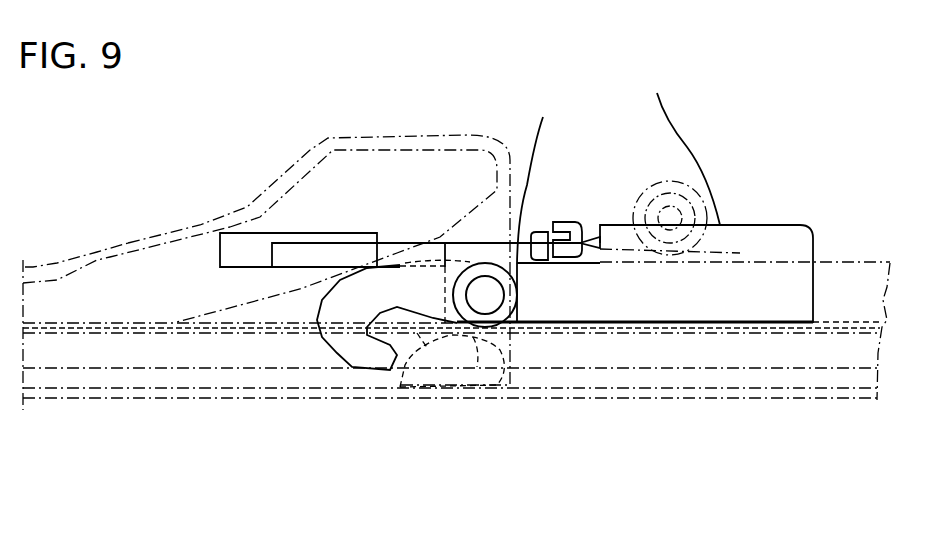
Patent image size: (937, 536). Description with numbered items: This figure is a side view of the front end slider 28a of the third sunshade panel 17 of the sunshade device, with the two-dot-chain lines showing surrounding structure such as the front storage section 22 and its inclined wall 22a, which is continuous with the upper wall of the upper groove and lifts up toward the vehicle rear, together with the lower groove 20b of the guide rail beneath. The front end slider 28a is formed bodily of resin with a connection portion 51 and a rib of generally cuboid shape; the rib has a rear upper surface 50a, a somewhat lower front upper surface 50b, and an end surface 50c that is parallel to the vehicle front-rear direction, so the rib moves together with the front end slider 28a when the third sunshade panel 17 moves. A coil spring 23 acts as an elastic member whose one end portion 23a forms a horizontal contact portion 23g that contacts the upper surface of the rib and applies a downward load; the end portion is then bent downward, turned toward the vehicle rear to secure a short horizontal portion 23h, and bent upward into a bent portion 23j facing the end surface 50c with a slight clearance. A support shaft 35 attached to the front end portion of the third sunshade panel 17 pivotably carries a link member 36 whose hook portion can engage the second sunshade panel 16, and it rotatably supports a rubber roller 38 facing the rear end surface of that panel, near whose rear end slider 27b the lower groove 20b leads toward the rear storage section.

The second sunshade panel 16 is at (233, 350).
The third sunshade panel 17 is at (858, 278).
The lower groove 20b is at (570, 362).
The front storage section 22 is at (337, 120).
The inclined wall 22a is at (128, 245).
The coil spring 23 is at (652, 192).
The one end portion of coil spring 23a is at (598, 227).
The contact portion 23g is at (540, 222).
The horizontal portion 23h is at (550, 256).
The bent portion 23j is at (583, 243).
The rear end slider 27b is at (487, 358).
The front end slider 28a is at (247, 240).
The support shaft 35 is at (485, 297).
The link member 36 is at (417, 283).
The rubber roller 38 is at (482, 268).
The rear upper surface 50a is at (678, 148).
The front upper surface 50b is at (558, 205).
The end surface of rib 50c is at (718, 307).
The connection portion 51 is at (348, 257).